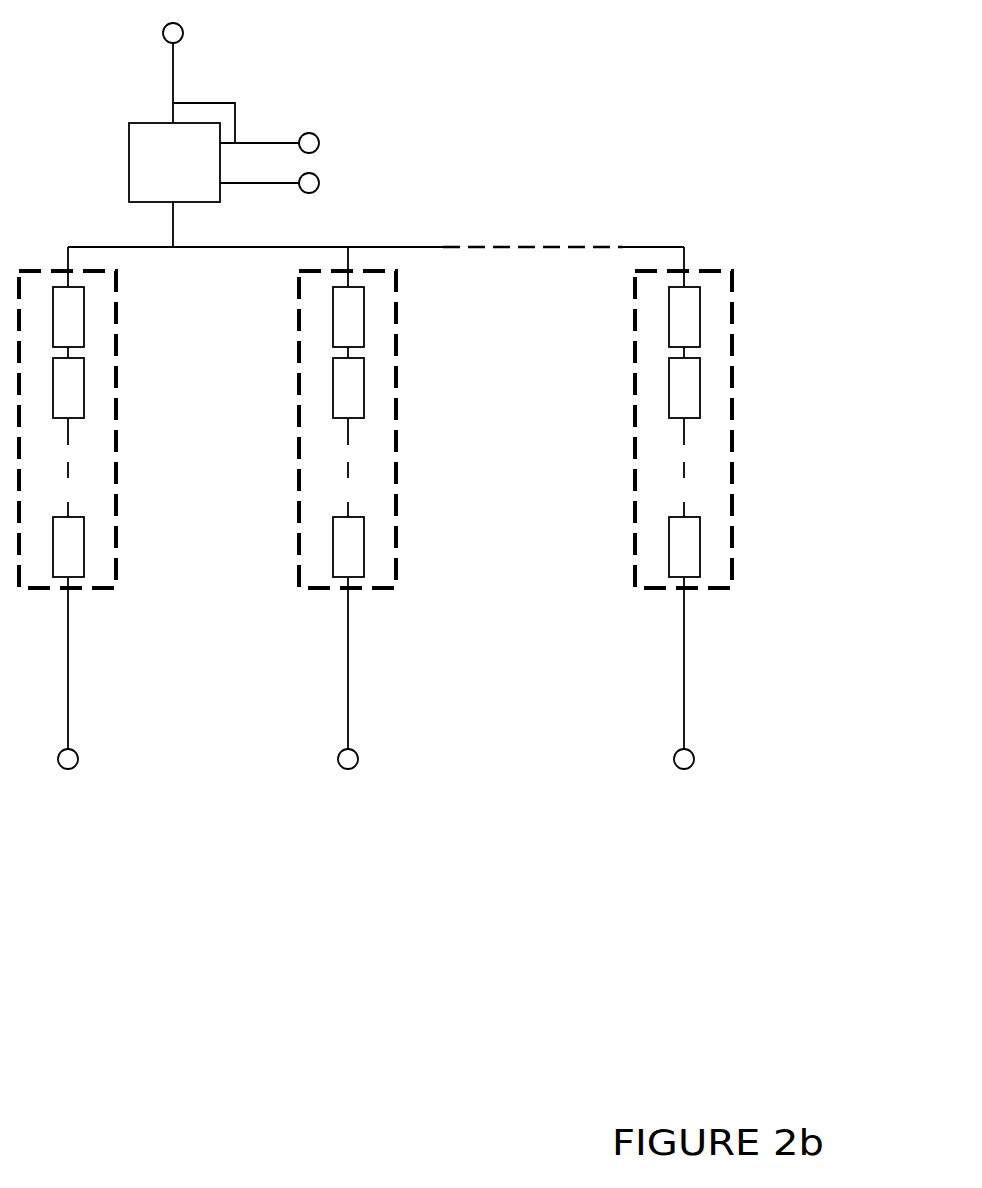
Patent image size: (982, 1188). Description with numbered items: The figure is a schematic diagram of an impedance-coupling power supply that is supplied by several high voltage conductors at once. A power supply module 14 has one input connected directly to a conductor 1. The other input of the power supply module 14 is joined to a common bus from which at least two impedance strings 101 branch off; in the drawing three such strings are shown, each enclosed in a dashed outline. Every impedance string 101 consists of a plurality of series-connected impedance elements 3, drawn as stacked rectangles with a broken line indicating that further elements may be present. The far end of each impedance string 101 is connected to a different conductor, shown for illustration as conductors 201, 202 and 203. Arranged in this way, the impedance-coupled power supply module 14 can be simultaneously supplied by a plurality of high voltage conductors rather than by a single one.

The conductor 1 is at (191, 71).
The power supply module 14 is at (224, 175).
The impedance element 3 is at (75, 389).
The impedance string 101 is at (117, 445).
The conductor 201 is at (102, 677).
The conductor 202 is at (382, 677).
The conductor 203 is at (718, 677).